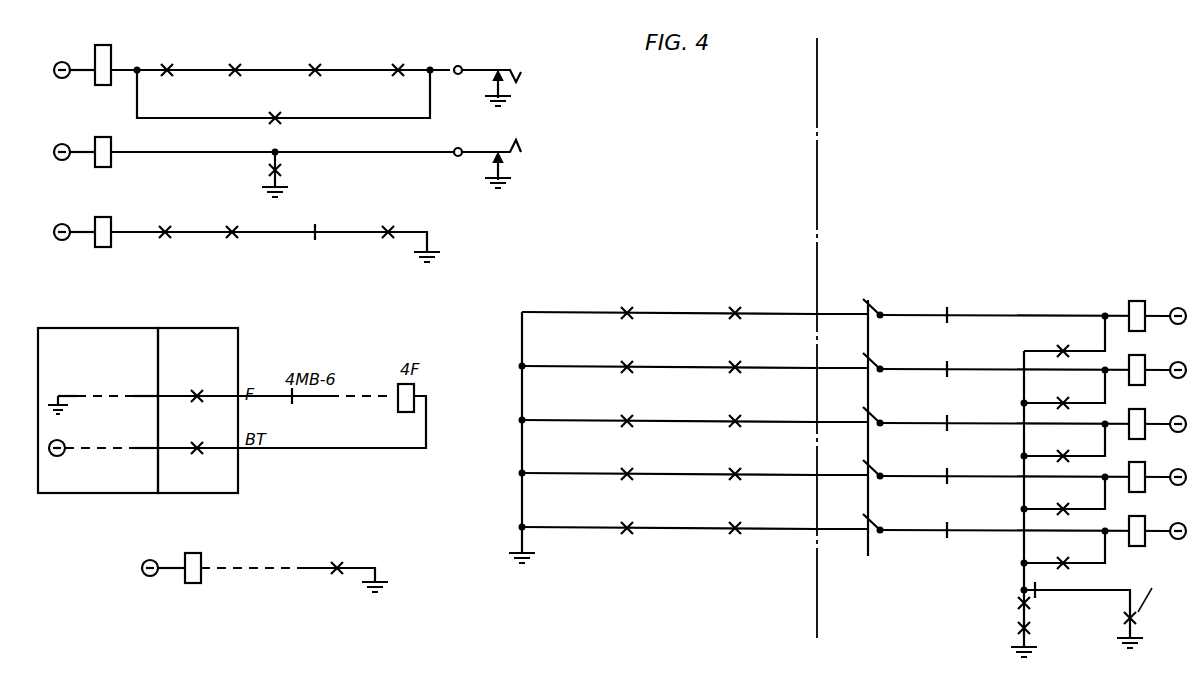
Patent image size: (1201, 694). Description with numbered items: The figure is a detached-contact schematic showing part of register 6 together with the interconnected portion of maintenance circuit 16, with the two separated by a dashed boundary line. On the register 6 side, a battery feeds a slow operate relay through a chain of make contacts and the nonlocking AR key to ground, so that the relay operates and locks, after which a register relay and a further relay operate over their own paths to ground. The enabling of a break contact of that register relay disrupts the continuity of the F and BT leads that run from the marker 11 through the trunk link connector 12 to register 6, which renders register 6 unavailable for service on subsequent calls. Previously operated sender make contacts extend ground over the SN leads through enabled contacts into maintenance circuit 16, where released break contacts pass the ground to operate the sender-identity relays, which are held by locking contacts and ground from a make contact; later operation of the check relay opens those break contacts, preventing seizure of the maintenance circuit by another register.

The register 6 is at (435, 307).
The marker 11 is at (52, 328).
The trunk link connector 12 is at (190, 328).
The maintenance circuit 16 is at (1002, 411).